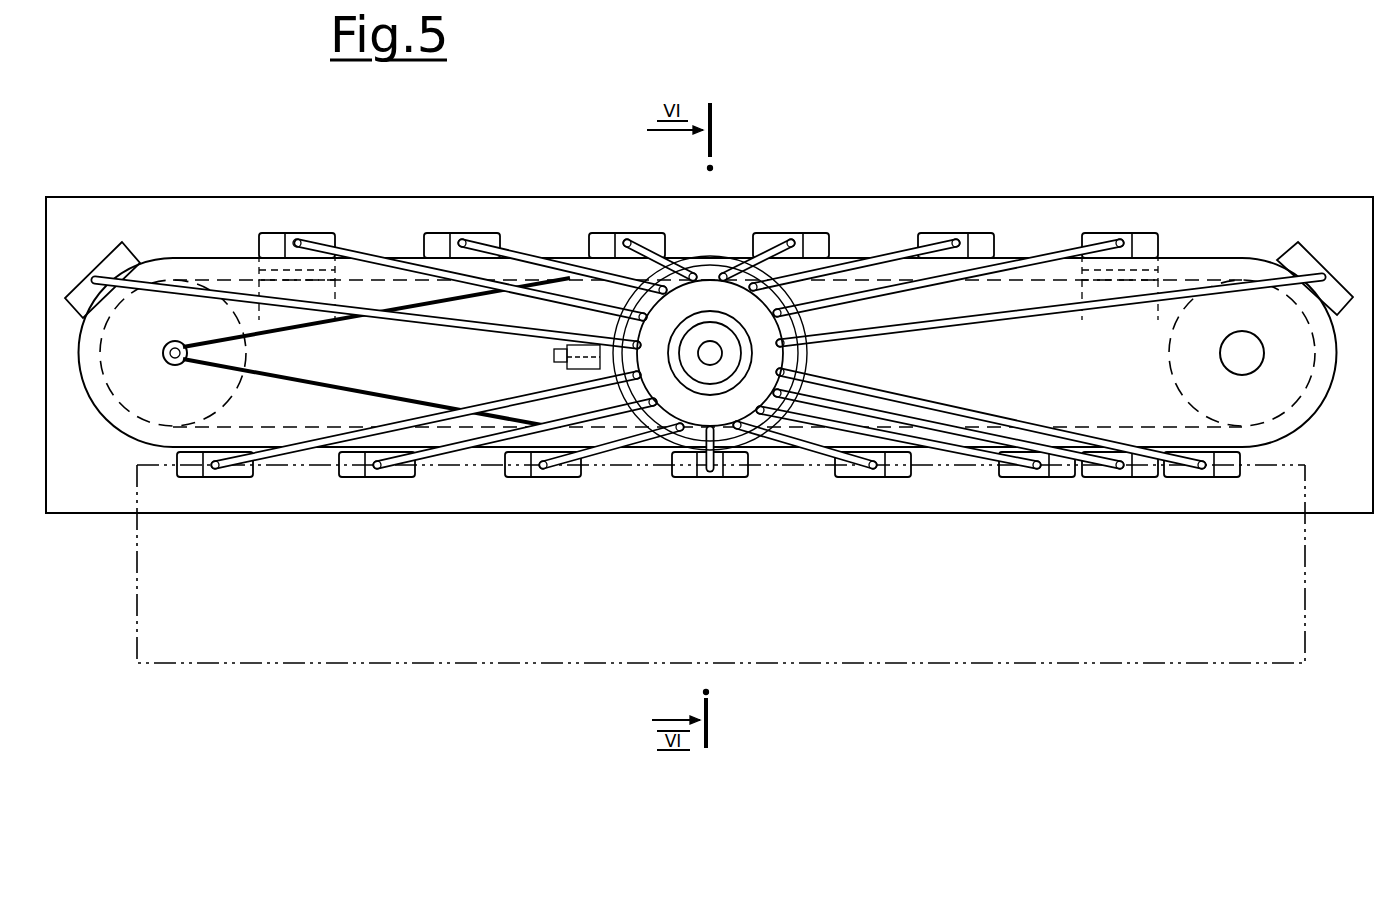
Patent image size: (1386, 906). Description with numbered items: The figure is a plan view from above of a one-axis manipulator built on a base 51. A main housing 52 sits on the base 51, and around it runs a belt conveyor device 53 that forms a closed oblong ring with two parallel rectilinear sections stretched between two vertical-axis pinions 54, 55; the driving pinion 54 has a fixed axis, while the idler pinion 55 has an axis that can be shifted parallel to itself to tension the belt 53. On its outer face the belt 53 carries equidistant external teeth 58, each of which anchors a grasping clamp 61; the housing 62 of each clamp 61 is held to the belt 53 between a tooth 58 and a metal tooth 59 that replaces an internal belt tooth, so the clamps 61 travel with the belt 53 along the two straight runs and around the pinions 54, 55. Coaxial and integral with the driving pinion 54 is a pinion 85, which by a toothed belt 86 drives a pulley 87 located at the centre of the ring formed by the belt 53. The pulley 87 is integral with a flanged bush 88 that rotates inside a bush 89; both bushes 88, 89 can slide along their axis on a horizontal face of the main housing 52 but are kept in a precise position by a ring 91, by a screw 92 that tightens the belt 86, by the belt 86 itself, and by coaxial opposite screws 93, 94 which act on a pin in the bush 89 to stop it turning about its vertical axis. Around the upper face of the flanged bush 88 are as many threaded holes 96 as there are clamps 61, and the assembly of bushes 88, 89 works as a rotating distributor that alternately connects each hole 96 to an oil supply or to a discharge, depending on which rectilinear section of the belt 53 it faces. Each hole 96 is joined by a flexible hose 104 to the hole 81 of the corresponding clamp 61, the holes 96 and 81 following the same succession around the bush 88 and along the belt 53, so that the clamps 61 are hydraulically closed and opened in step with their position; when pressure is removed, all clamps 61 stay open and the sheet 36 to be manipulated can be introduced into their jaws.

The sheet 36 is at (1175, 638).
The base 51 is at (1243, 217).
The main housing 52 is at (1173, 272).
The belt conveyor device 53 is at (293, 445).
The driving pinion 54 is at (1277, 395).
The idler pinion 55 is at (152, 400).
The external teeth 58 is at (321, 295).
The metal tooth 59 is at (293, 295).
The clamp 61 is at (320, 233).
The housing 62 is at (268, 233).
The hole 81 is at (790, 240).
The pinion 85 is at (104, 316).
The toothed belt 86 is at (396, 300).
The pulley 87 is at (708, 353).
The flanged bush 88 is at (718, 410).
The bush 89 is at (664, 470).
The ring 91 is at (696, 335).
The screw 92 is at (553, 358).
The screw 93 is at (812, 322).
The screw 94 is at (812, 376).
The threaded hole 96 is at (727, 275).
The flexible hose 104 is at (882, 262).